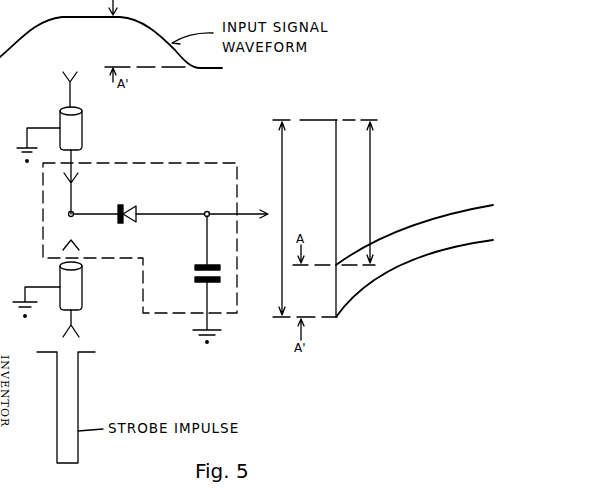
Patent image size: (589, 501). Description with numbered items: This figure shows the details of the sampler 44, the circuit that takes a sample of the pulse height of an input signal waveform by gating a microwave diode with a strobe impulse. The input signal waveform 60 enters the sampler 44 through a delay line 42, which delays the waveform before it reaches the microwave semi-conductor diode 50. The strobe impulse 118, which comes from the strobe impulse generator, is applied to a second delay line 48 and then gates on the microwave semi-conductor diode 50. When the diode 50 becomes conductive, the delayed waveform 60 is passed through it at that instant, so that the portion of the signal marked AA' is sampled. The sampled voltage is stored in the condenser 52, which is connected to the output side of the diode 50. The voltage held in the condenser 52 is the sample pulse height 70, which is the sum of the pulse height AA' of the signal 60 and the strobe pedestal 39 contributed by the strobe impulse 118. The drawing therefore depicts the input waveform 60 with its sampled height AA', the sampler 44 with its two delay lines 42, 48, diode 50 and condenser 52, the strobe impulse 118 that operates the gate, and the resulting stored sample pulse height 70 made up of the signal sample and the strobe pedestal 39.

The input signal waveform 60 is at (26, 36).
The delay line 42 is at (83, 127).
The sampler 44 is at (183, 160).
The microwave semi-conductor diode 50 is at (126, 204).
The condenser 52 is at (192, 274).
The delay line 48 is at (83, 291).
The strobe impulse 118 is at (78, 392).
The sample pulse height 70 is at (321, 218).
The strobe pedestal 39 is at (337, 193).